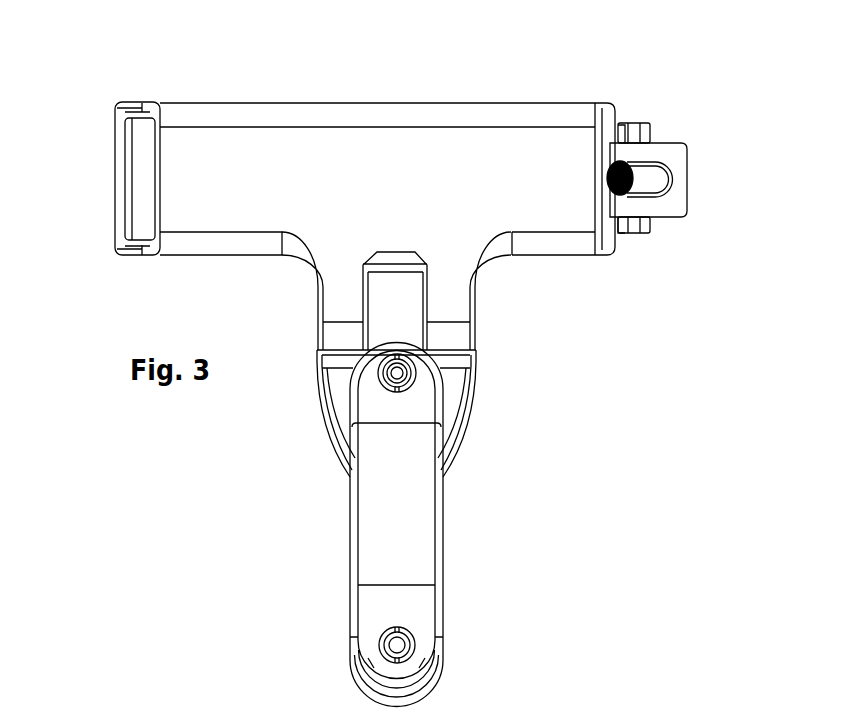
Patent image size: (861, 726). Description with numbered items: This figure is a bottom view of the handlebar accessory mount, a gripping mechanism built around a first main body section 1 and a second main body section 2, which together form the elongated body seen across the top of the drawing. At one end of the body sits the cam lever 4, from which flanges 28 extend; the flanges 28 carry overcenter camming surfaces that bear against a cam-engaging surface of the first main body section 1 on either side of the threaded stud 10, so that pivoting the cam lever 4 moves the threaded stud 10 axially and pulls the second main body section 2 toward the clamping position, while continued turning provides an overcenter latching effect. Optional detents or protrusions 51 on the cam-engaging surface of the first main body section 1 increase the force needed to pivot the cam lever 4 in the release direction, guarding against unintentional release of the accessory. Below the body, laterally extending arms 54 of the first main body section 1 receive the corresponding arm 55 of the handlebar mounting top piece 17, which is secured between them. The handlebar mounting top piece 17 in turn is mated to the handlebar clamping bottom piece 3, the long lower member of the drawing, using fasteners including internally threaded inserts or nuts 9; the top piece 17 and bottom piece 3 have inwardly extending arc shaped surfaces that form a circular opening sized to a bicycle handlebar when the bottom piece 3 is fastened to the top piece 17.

The first main body section 1 is at (335, 140).
The second main body section 2 is at (143, 178).
The handlebar clamping bottom piece 3 is at (415, 535).
The cam lever 4 is at (682, 178).
The internally threaded inserts or nuts 9 is at (403, 387).
The threaded stud 10 is at (620, 193).
The handlebar mounting top piece 17 is at (342, 380).
The flanges 28 is at (643, 158).
The detents or protrusions 51 is at (625, 125).
The laterally extending arms 54 is at (347, 293).
The arm 55 is at (393, 303).